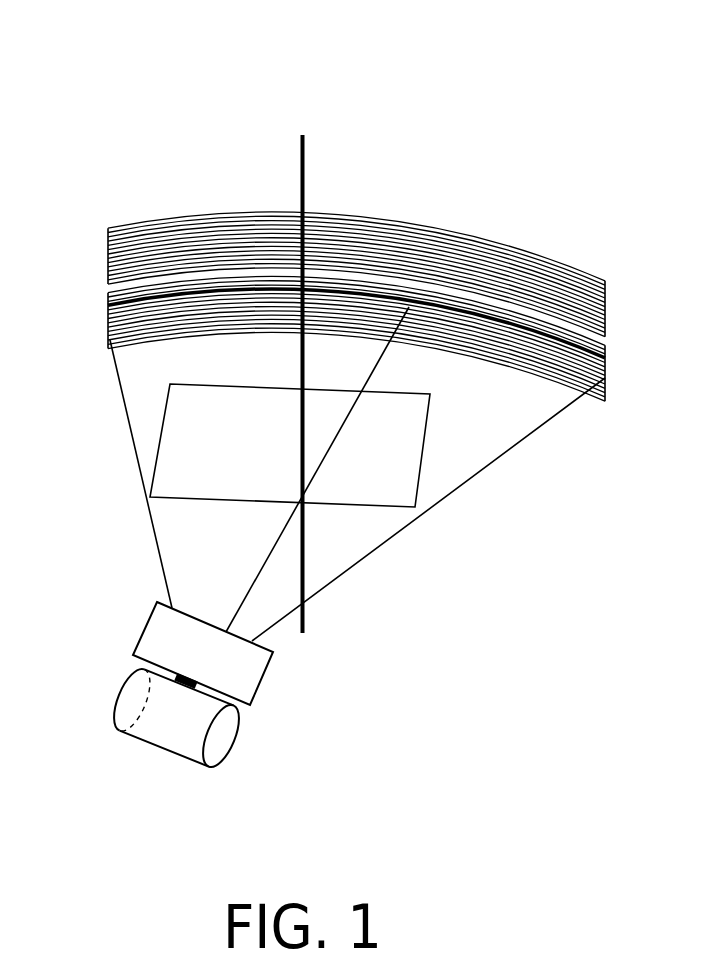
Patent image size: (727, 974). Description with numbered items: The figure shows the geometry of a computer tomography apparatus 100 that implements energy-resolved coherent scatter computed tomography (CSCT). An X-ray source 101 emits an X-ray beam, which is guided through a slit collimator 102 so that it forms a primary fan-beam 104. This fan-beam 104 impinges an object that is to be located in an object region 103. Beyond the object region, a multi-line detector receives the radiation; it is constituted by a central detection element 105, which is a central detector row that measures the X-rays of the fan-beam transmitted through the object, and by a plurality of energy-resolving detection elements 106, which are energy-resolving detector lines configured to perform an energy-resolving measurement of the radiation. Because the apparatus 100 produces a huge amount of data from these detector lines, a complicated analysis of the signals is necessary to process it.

The computer tomography apparatus 100 is at (468, 91).
The X-ray source 101 is at (118, 698).
The slit collimator 102 is at (142, 630).
The object region 103 is at (180, 459).
The primary fan-beam 104 is at (358, 543).
The central detection element 105 is at (493, 323).
The energy-resolving detection elements 106 is at (460, 249).